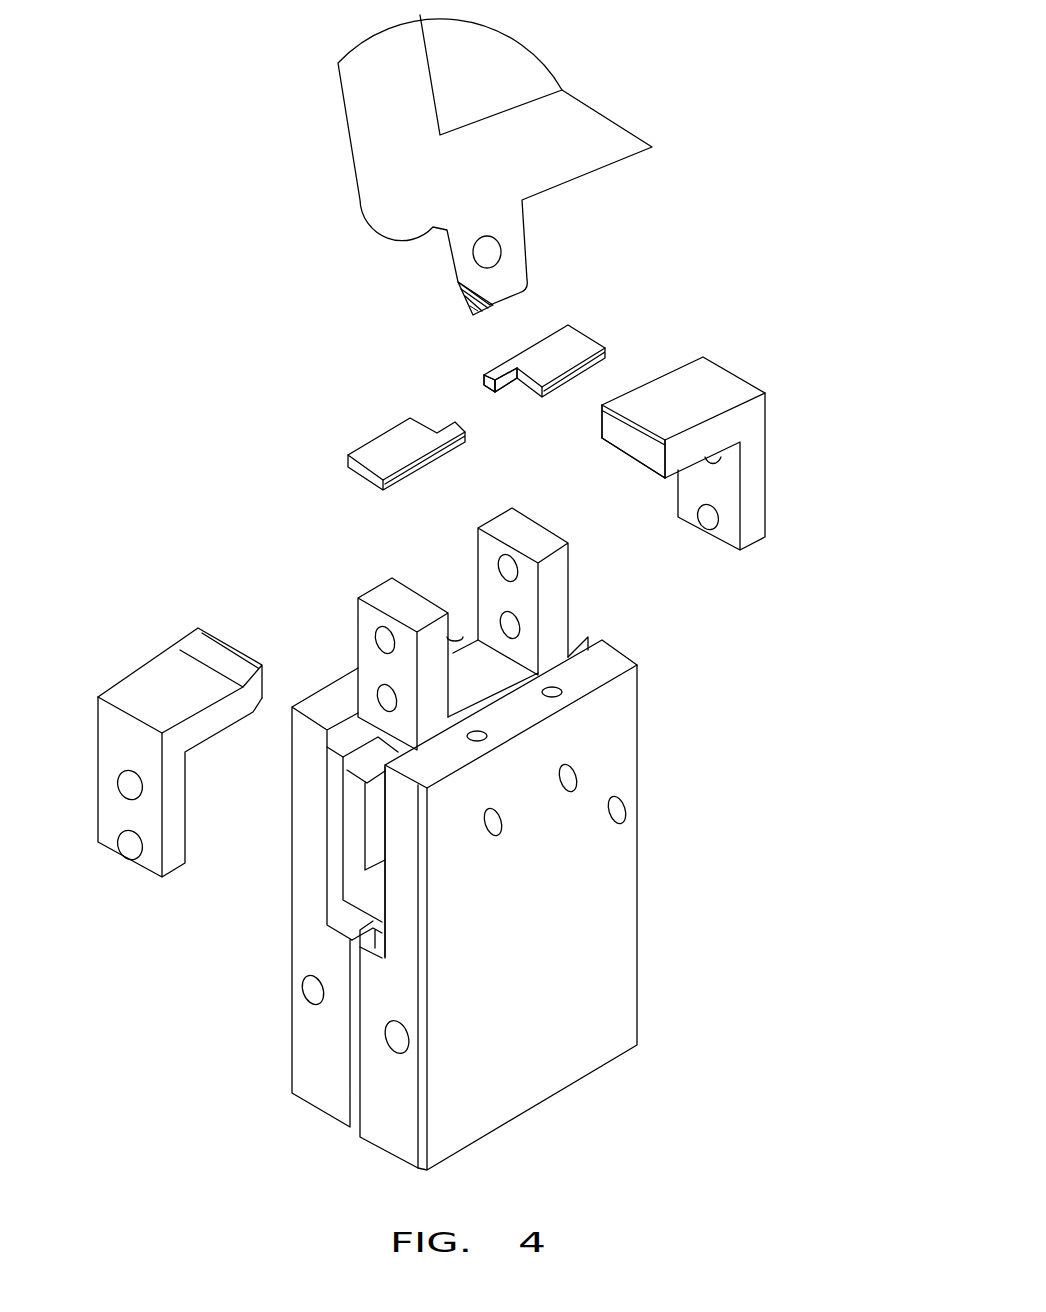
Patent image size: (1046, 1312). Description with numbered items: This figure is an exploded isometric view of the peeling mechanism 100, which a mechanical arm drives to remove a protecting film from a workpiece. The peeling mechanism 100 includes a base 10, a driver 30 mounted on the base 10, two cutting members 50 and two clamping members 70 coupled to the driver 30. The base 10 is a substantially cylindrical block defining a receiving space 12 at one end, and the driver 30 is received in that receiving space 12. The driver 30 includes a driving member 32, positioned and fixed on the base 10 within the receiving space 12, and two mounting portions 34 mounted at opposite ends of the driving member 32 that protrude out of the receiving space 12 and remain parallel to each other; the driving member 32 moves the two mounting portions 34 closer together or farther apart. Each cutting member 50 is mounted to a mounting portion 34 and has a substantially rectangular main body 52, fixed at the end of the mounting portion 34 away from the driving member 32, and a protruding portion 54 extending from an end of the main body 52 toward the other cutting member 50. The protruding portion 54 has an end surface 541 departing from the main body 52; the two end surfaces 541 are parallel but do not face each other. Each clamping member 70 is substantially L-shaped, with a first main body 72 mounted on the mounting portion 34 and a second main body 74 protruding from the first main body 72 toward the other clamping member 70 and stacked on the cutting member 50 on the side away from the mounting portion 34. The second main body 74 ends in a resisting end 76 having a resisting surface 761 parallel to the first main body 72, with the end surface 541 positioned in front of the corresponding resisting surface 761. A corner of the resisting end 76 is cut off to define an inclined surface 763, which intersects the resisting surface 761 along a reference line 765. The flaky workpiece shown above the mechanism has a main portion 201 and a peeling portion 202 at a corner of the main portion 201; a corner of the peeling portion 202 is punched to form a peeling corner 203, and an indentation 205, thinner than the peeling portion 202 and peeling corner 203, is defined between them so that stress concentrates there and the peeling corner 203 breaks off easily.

The peeling mechanism 100 is at (196, 428).
The base 10 is at (598, 862).
The receiving space 12 is at (349, 927).
The driver 30 is at (172, 895).
The driving member 32 is at (358, 882).
The mounting portion 34 is at (380, 718).
The cutting member 50 is at (662, 255).
The main body 52 is at (567, 352).
The protruding portion 54 is at (497, 372).
The end surface 541 is at (487, 392).
The clamping member 70 is at (842, 383).
The first main body 72 is at (750, 483).
The second main body 74 is at (702, 444).
The resisting end 76 is at (668, 450).
The resisting surface 761 is at (642, 440).
The inclined surface 763 is at (672, 480).
The reference line 765 is at (615, 447).
The main portion 201 is at (378, 130).
The peeling portion 202 is at (458, 243).
The peeling corner 203 is at (475, 312).
The indentation 205 is at (470, 300).